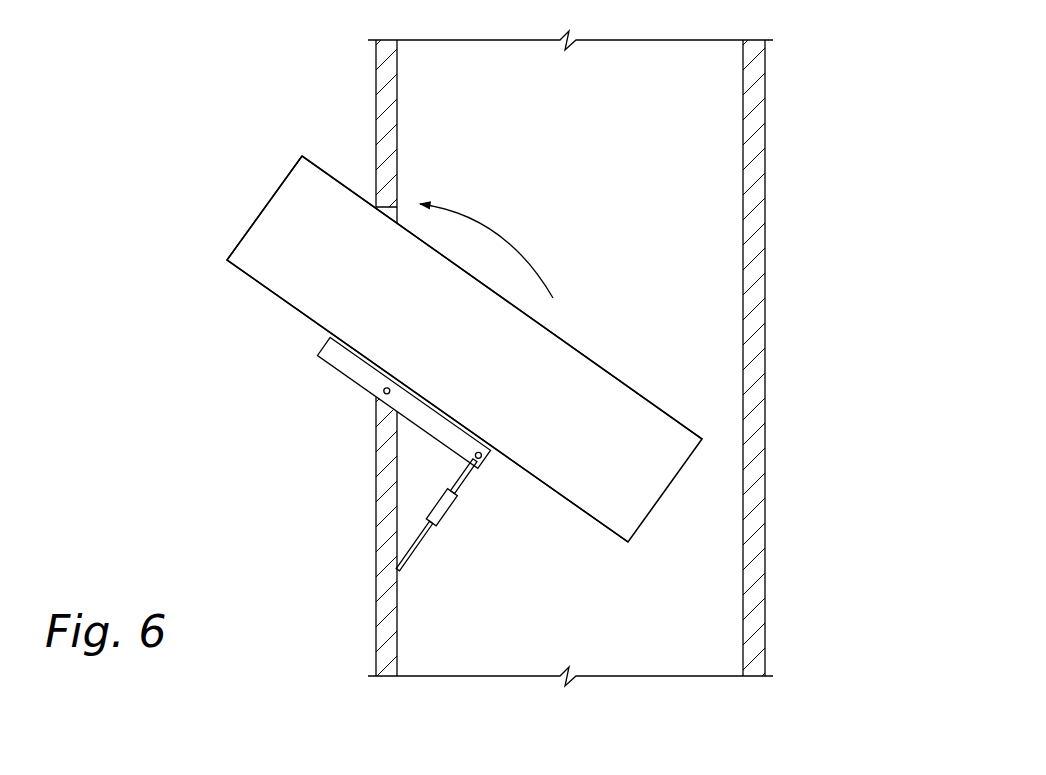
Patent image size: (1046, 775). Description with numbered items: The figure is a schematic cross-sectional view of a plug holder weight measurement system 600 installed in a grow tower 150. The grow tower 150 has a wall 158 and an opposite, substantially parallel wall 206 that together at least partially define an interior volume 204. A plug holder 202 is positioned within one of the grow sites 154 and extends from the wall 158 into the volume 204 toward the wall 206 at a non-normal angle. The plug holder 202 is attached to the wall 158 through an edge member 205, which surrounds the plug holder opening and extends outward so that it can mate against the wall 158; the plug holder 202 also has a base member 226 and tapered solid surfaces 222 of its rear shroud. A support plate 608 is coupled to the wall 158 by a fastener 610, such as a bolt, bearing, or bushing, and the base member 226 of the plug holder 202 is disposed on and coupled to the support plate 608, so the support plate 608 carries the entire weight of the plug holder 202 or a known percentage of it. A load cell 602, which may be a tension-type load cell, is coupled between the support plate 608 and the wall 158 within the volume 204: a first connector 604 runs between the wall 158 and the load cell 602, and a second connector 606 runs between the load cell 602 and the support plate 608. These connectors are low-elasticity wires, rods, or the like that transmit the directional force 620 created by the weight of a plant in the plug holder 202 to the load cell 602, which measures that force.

The grow tower 150 is at (790, 237).
The grow sites 154 is at (273, 313).
The wall 158 is at (375, 602).
The plug holder 202 is at (445, 366).
The interior volume 204 is at (512, 124).
The edge member 205 is at (270, 202).
The wall 206 is at (743, 108).
The surfaces 222 is at (603, 363).
The base member 226 is at (595, 520).
The plug holder weight measurement system 600 is at (190, 517).
The load cell 602 is at (443, 517).
The first connector 604 is at (417, 550).
The second connector 606 is at (463, 487).
The support plate 608 is at (455, 432).
The fastener 610 is at (381, 392).
The directional force 620 is at (493, 230).